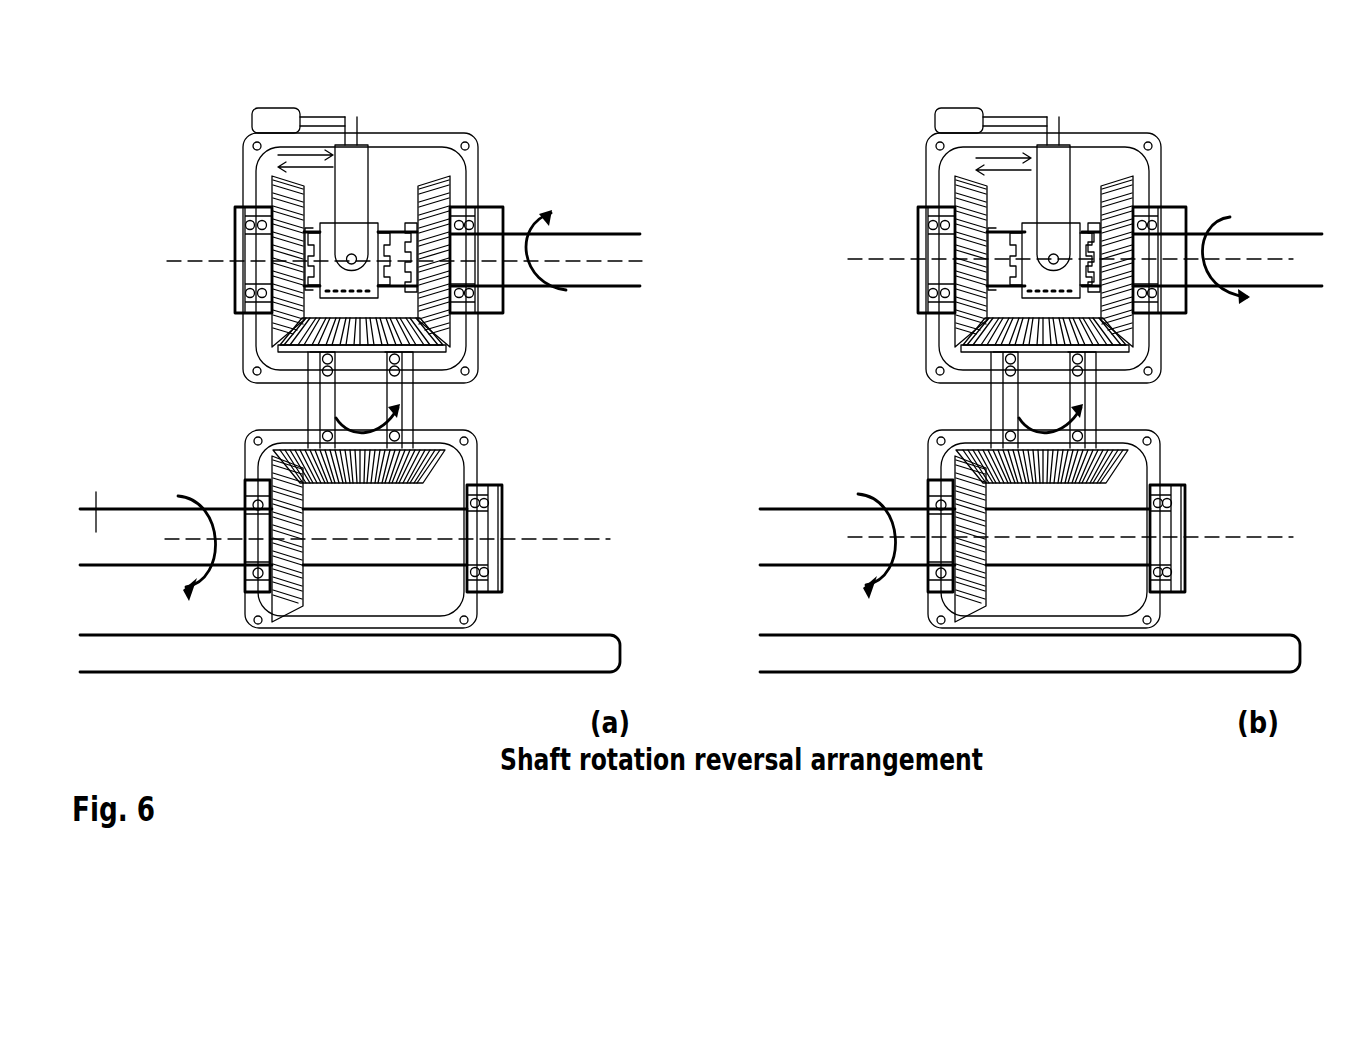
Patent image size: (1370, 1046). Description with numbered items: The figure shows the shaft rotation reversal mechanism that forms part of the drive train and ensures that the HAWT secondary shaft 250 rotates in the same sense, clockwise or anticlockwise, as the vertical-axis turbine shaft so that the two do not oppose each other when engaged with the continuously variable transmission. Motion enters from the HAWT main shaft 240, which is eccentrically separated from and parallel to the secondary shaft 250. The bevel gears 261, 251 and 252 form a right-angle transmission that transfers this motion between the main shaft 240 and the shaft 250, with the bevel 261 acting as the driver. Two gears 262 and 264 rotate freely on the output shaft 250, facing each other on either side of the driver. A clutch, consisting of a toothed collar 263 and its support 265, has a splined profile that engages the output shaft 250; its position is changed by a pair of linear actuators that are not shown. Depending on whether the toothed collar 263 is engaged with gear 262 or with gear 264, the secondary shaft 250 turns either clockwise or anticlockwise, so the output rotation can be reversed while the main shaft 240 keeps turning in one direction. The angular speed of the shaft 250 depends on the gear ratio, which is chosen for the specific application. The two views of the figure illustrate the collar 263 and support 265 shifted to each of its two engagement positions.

The HAWT main shaft 240 is at (837, 537).
The secondary shaft 250 is at (608, 272).
The bevel gear 251 is at (280, 458).
The bevel gear 252 is at (277, 480).
The driver bevel 261 is at (445, 342).
The gear 262 is at (273, 193).
The toothed collar 263 is at (443, 207).
The gear 264 is at (447, 320).
The clutch support 265 is at (360, 193).